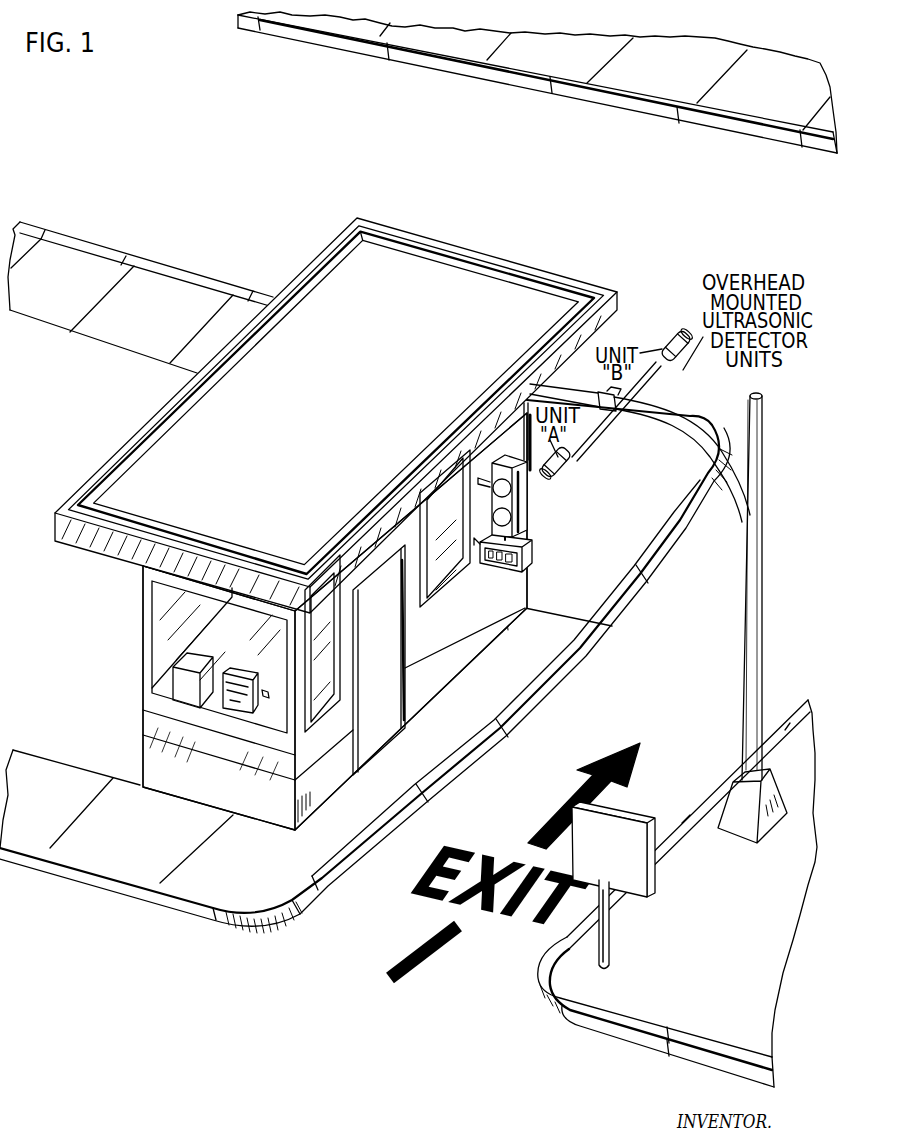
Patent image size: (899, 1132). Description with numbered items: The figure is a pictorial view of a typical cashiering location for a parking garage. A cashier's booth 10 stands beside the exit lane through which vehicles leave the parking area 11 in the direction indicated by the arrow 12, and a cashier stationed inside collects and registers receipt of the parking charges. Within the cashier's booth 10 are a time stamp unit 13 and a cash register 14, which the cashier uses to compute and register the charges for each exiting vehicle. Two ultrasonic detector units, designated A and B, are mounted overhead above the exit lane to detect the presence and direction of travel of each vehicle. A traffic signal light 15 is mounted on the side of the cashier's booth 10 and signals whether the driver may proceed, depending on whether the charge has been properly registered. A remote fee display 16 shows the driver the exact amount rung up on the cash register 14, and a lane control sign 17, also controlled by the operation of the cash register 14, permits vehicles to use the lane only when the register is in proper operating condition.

The cashier's booth 10 is at (132, 441).
The parking area 11 is at (408, 761).
The arrow 12 is at (635, 762).
The time stamp unit 13 is at (187, 670).
The cash register 14 is at (235, 694).
The traffic signal light 15 is at (528, 484).
The remote fee display 16 is at (531, 548).
The lane control sign 17 is at (638, 898).